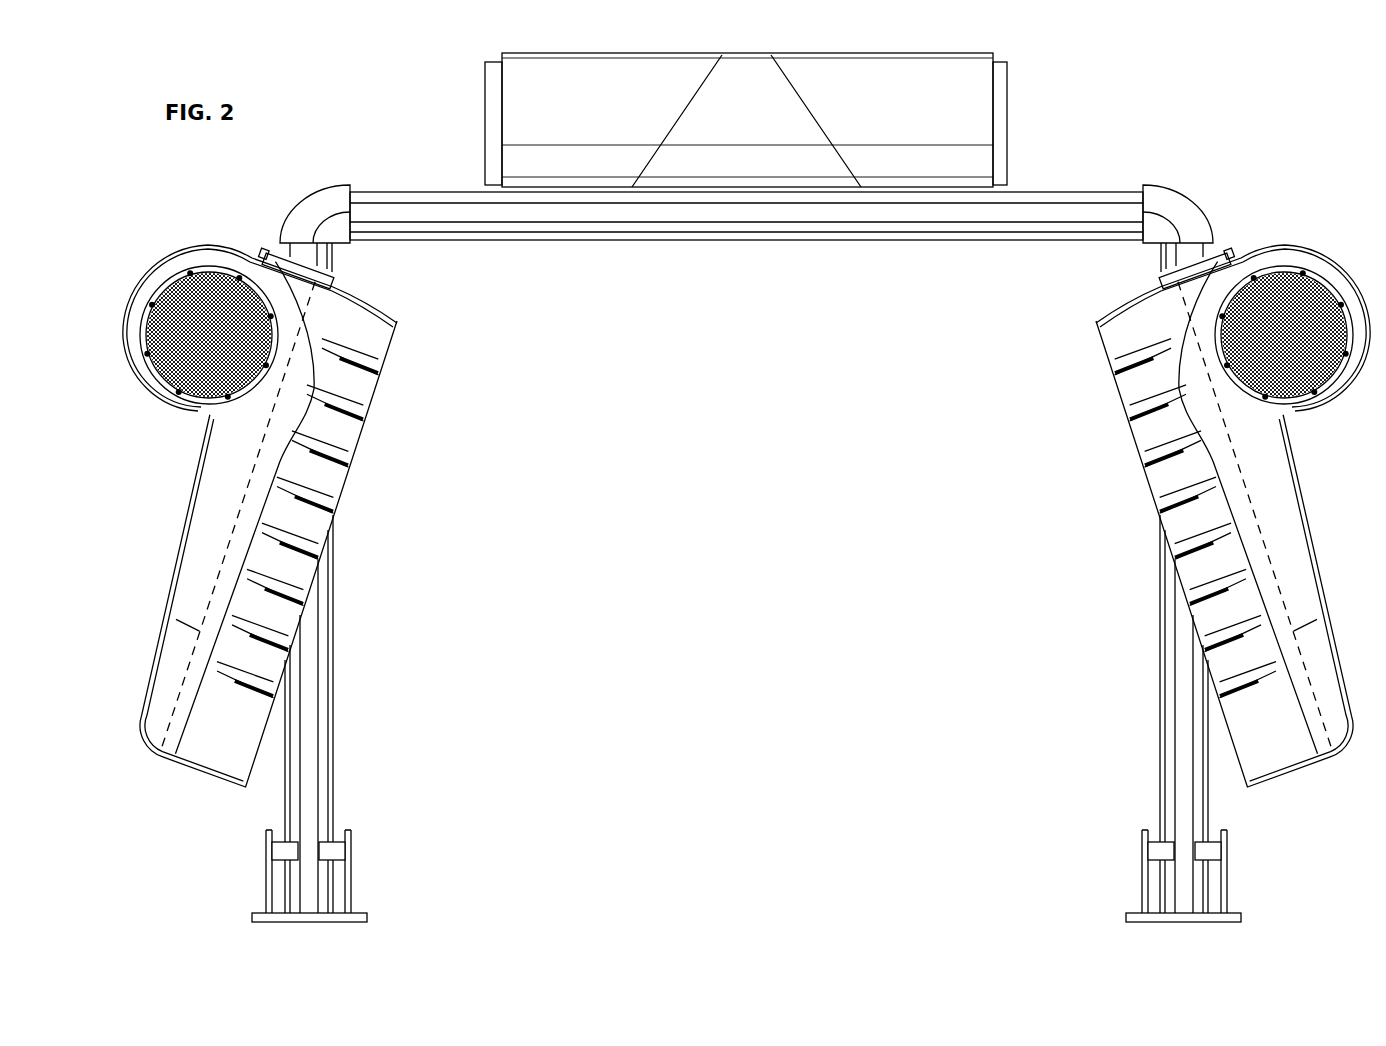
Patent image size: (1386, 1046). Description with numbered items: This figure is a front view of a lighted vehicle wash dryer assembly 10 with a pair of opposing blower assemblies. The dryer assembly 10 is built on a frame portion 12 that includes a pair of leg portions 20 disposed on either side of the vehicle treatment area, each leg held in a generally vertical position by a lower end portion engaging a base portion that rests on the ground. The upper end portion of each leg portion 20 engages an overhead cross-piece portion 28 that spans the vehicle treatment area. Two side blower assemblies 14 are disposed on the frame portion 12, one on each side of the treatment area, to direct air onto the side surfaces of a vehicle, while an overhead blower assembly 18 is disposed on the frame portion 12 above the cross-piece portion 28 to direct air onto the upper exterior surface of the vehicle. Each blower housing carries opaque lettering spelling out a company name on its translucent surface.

The dryer assembly 10 is at (751, 124).
The frame portion 12 is at (751, 162).
The side blower assemblies 14 is at (1238, 516).
The overhead blower assembly 18 is at (598, 73).
The leg portions 20 is at (322, 650).
The overhead cross-piece portion 28 is at (425, 200).